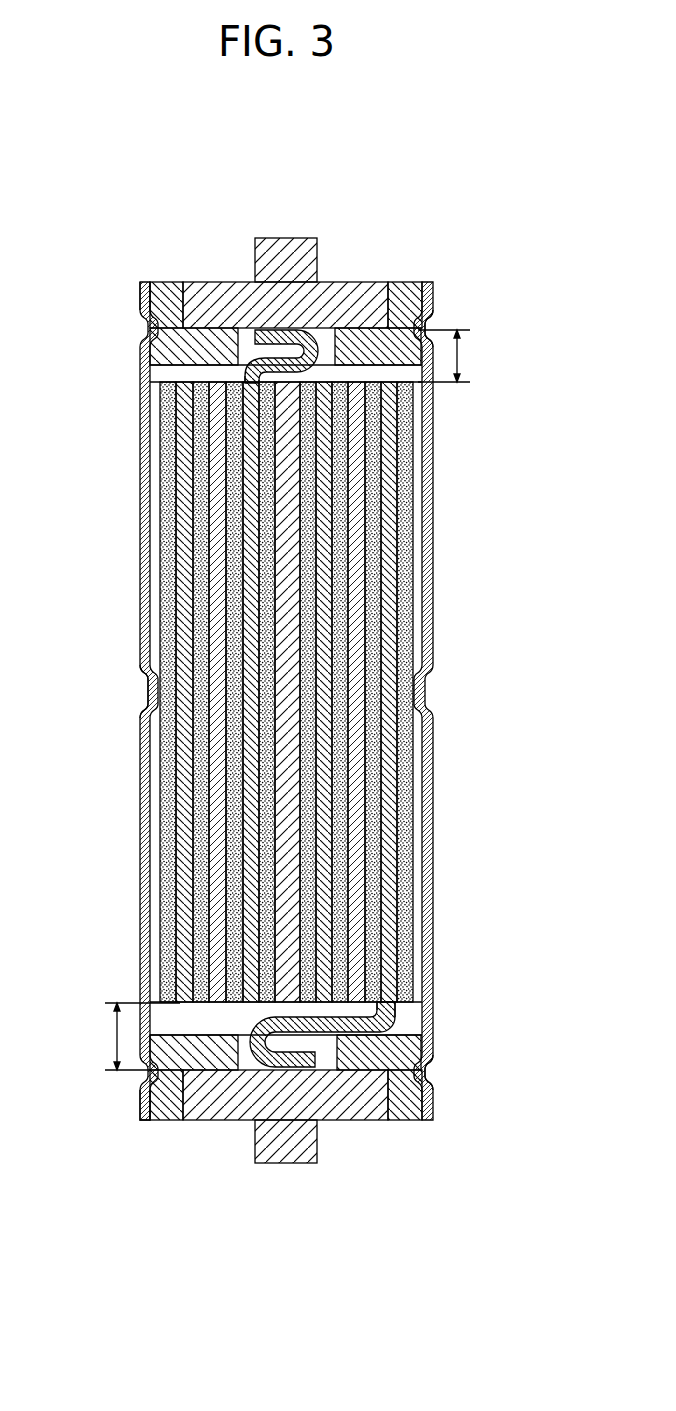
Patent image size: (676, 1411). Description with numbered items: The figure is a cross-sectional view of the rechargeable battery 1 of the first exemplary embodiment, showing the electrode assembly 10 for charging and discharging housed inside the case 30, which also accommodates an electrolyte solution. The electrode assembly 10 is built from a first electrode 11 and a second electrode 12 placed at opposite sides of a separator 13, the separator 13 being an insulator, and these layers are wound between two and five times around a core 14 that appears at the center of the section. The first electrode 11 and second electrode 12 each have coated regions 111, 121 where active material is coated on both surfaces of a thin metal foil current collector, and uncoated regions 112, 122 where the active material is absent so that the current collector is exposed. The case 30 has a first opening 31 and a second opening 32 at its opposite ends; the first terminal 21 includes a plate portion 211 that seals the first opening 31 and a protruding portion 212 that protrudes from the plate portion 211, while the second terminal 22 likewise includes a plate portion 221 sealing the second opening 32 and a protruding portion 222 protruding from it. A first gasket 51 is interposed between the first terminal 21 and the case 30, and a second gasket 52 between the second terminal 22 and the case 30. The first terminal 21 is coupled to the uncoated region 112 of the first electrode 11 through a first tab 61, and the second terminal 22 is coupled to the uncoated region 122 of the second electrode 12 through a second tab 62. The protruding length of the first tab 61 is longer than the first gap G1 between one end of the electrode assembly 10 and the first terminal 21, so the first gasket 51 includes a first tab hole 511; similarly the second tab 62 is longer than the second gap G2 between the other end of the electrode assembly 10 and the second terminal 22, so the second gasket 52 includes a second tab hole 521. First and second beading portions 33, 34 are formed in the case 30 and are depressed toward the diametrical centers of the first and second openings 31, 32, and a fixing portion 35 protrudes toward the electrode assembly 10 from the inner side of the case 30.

The rechargeable battery 1 is at (315, 190).
The electrode assembly 10 is at (424, 625).
The first electrode 11 is at (262, 818).
The coated region 111 is at (240, 892).
The uncoated region 112 is at (232, 369).
The second electrode 12 is at (188, 466).
The coated region 121 is at (412, 580).
The uncoated region 122 is at (398, 1008).
The separator 13 is at (223, 940).
The core 14 is at (283, 725).
The first terminal 21 is at (406, 215).
The plate portion 211 is at (355, 310).
The protruding portion 212 is at (297, 257).
The second terminal 22 is at (407, 1190).
The plate portion 221 is at (356, 1097).
The protruding portion 222 is at (320, 1163).
The case 30 is at (140, 776).
The first opening 31 is at (158, 283).
The second opening 32 is at (157, 1113).
The first beading portion 33 is at (433, 322).
The second beading portion 34 is at (433, 1075).
The fixing portion 35 is at (148, 694).
The first gasket 51 is at (173, 300).
The first tab hole 511 is at (230, 360).
The second gasket 52 is at (181, 1090).
The second tab hole 521 is at (340, 1038).
The first tab 61 is at (270, 340).
The second tab 62 is at (272, 1068).
The first gap G1 is at (452, 356).
The second gap G2 is at (133, 1036).